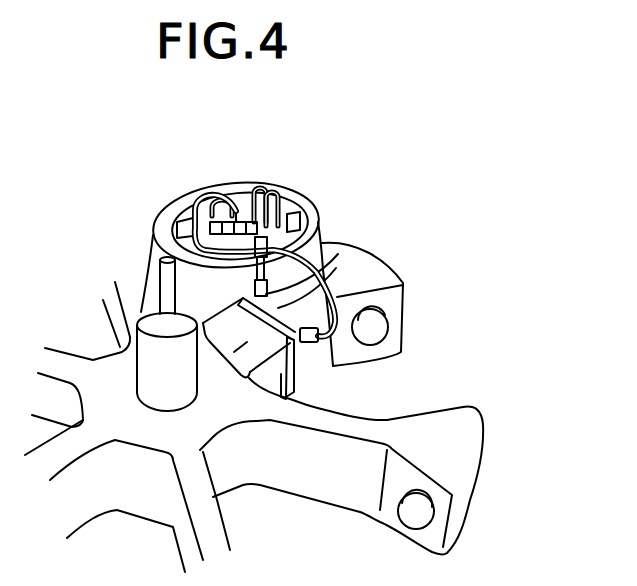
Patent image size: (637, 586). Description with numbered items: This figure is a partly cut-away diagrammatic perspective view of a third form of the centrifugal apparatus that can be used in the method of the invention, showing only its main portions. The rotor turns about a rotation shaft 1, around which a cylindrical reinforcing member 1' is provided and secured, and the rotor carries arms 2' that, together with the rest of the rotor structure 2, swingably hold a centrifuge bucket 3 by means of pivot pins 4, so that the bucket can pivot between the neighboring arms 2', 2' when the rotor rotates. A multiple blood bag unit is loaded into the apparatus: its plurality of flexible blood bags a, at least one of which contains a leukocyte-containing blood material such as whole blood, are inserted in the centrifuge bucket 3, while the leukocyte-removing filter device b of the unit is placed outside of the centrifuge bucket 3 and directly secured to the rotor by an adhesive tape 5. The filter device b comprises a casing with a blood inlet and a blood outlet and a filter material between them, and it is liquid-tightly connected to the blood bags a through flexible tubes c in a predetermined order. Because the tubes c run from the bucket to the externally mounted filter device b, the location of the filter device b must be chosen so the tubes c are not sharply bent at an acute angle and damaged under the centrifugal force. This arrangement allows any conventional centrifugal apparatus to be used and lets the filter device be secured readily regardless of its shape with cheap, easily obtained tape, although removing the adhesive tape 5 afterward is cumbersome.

The rotation shaft 1 is at (141, 322).
The cylindrical reinforcing member 1' is at (126, 485).
The bracket arm 2 is at (77, 367).
The arm 2' is at (369, 480).
The centrifuge bucket 3 is at (317, 243).
The pivot pin 4 is at (380, 335).
The adhesive tape 5 is at (296, 360).
The flexible blood bag a is at (247, 190).
The leukocyte-removing filter device b is at (231, 355).
The flexible tube c is at (209, 204).